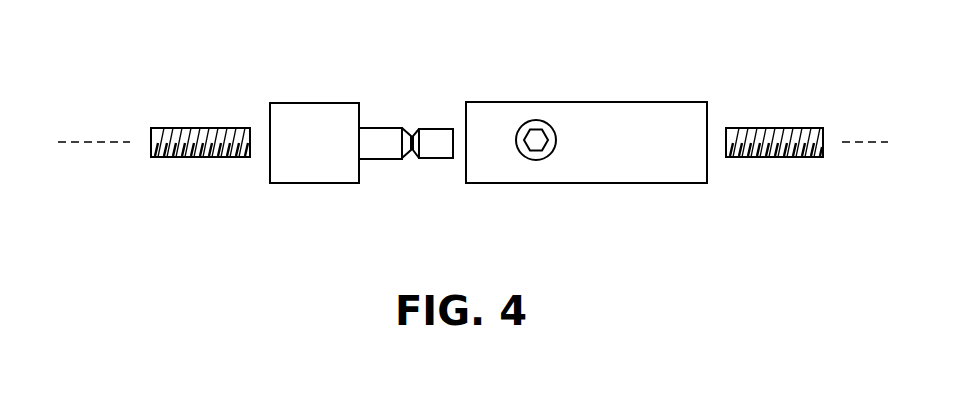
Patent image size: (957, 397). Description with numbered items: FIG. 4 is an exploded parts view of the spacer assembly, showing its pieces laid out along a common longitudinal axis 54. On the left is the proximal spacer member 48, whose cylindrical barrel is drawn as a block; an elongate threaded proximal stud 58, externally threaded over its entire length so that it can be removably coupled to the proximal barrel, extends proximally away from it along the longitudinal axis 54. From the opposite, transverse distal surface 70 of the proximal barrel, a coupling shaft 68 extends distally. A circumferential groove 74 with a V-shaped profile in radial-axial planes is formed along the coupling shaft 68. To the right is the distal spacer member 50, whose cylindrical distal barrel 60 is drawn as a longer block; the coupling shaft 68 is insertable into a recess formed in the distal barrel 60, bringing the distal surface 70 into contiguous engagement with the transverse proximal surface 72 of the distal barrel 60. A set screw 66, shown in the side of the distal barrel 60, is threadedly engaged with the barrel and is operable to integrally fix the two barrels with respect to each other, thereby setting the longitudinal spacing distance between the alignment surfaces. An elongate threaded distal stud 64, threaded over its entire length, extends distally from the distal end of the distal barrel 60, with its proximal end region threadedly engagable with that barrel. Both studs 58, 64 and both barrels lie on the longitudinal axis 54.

The proximal spacer member 48 is at (292, 183).
The distal spacer member 50 is at (643, 183).
The longitudinal axis 54 is at (92, 141).
The threaded proximal stud 58 is at (195, 128).
The distal barrel 60 is at (603, 102).
The threaded distal stud 64 is at (797, 128).
The set screw 66 is at (536, 160).
The coupling shaft 68 is at (382, 127).
The transverse distal surface 70 is at (359, 165).
The transverse proximal surface 72 is at (466, 117).
The circumferential groove 74 is at (406, 159).